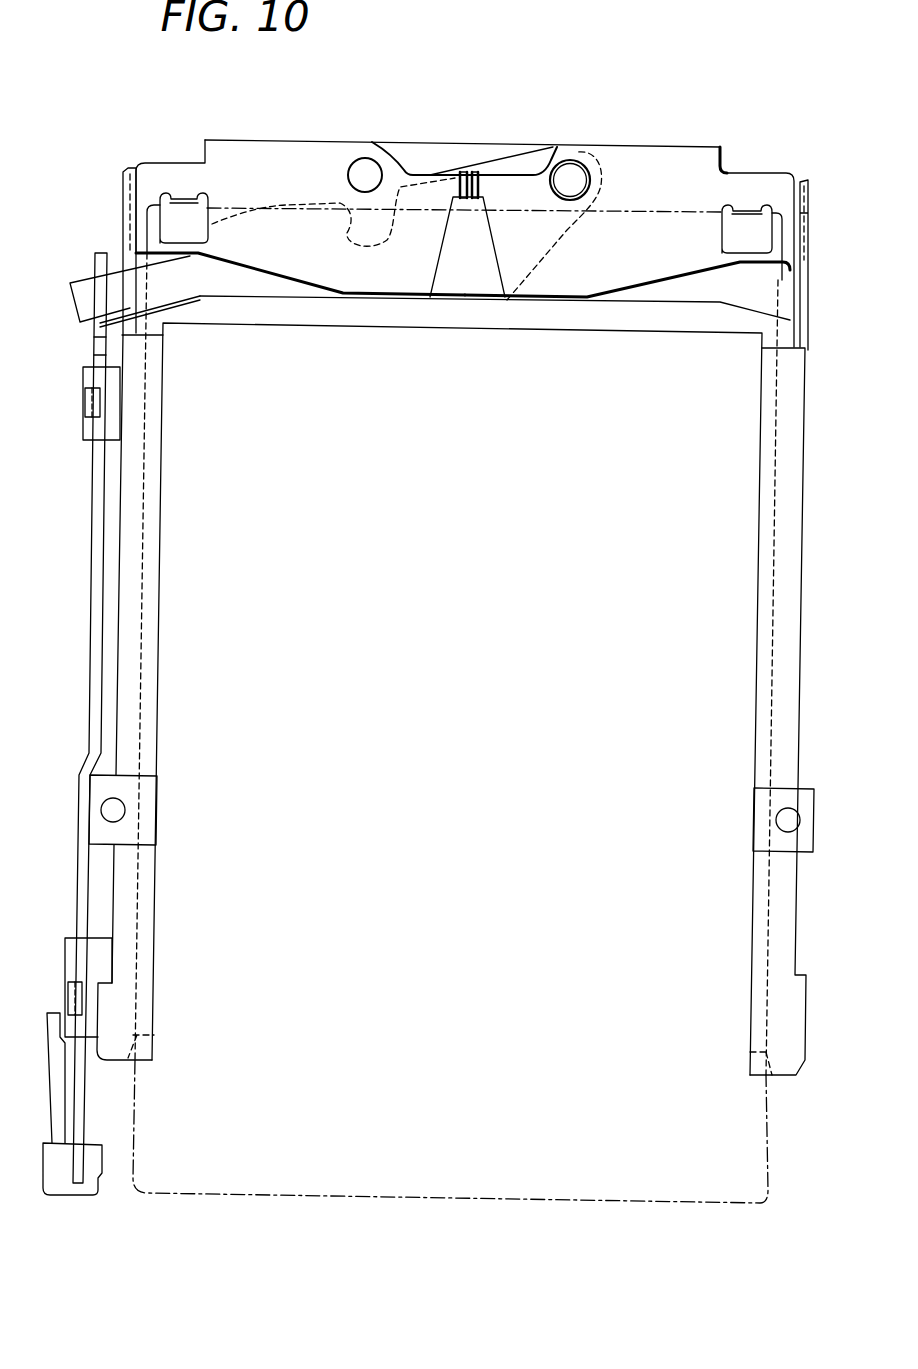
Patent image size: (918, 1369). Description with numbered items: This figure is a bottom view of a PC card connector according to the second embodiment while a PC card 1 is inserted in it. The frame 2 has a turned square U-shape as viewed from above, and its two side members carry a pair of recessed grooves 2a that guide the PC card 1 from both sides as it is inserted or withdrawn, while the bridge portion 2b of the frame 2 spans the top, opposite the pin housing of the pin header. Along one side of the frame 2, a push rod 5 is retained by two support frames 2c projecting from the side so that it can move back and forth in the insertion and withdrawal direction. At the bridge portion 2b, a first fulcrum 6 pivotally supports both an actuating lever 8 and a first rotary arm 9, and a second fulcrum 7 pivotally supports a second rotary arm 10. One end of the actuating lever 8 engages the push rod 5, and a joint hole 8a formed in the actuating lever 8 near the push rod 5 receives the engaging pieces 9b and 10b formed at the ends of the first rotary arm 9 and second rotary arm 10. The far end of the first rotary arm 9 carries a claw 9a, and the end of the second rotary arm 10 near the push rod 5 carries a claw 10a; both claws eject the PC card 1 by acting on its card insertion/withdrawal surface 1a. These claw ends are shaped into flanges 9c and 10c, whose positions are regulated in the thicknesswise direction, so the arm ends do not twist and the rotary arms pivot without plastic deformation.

The PC card 1 is at (766, 1147).
The card insertion/withdrawal surface 1a is at (620, 210).
The frame 2 is at (805, 410).
The recessed grooves 2a is at (776, 592).
The bridge portion 2b is at (415, 147).
The support frames 2c is at (83, 430).
The push rod 5 is at (90, 650).
The first fulcrum 6 is at (573, 168).
The second fulcrum 7 is at (358, 165).
The actuating lever 8 is at (517, 160).
The joint hole 8a is at (453, 170).
The first rotary arm 9 is at (705, 152).
The claw 9a is at (753, 207).
The engaging piece 9b is at (475, 207).
The flange 9c is at (787, 247).
The second rotary arm 10 is at (238, 147).
The claw 10a is at (182, 196).
The engaging piece 10b is at (463, 207).
The flange 10c is at (142, 232).